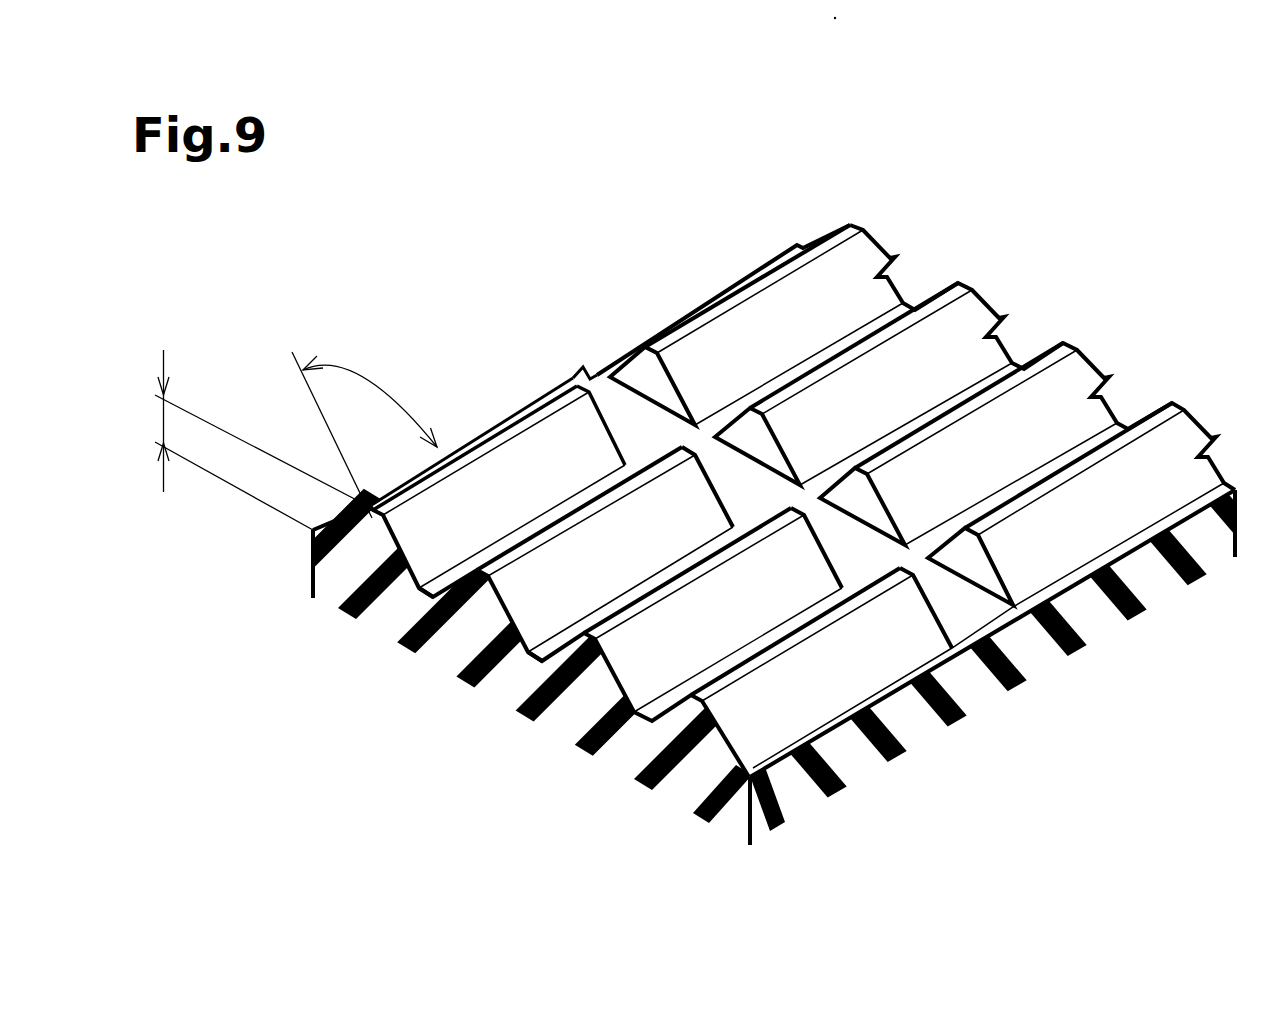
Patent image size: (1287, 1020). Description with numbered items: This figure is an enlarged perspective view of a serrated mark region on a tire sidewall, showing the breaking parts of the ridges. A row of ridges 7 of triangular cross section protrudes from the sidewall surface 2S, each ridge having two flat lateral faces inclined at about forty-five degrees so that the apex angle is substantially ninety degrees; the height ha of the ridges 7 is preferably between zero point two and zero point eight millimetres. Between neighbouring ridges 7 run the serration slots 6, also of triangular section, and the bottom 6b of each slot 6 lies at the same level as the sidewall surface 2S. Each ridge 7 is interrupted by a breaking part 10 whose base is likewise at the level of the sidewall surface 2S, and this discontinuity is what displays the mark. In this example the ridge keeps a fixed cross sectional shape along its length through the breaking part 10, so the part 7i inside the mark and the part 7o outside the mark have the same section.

The serration slot 6 is at (768, 566).
The bottom of the slot 6b is at (443, 705).
The ridge 7 is at (663, 742).
The part inside the mark 7i is at (812, 297).
The part outside the mark 7o is at (524, 465).
The breaking part 10 is at (960, 617).
The sidewall surface 2S is at (798, 738).
The height of the ridges ha is at (164, 419).